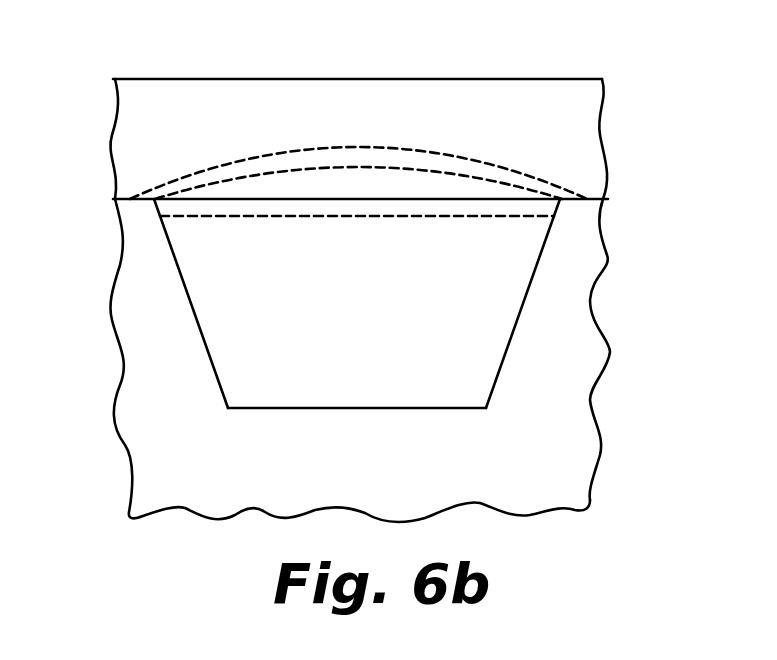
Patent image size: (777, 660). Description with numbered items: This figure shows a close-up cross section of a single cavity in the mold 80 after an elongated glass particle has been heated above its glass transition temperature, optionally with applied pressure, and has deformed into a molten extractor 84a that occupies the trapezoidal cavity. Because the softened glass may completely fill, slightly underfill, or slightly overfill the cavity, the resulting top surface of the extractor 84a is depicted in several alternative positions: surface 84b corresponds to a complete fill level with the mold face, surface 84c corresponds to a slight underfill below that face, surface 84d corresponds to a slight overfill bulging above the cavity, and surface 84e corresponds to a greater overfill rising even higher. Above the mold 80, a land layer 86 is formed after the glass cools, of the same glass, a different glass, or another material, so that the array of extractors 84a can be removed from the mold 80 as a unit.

The mold 80 is at (582, 390).
The land layer 86 is at (585, 133).
The molten extractor 84a is at (390, 360).
The top surface (complete fill) 84b is at (190, 202).
The top surface (slight underfill) 84c is at (517, 220).
The top surface (slight overfill) 84d is at (345, 167).
The top surface (greater overfill) 84e is at (438, 150).